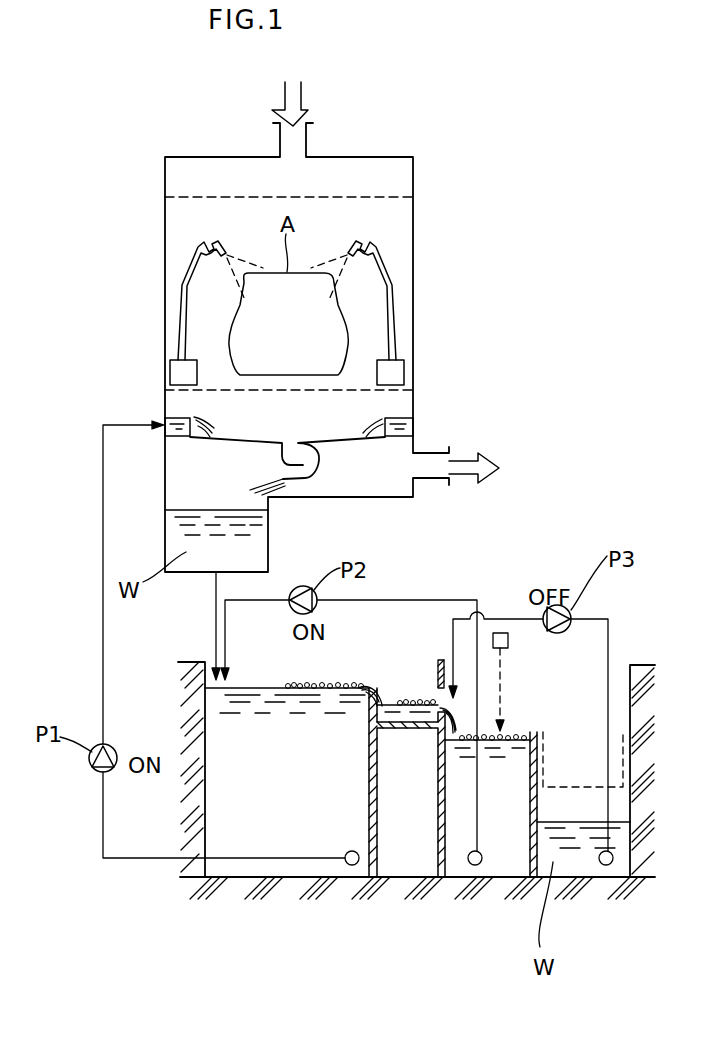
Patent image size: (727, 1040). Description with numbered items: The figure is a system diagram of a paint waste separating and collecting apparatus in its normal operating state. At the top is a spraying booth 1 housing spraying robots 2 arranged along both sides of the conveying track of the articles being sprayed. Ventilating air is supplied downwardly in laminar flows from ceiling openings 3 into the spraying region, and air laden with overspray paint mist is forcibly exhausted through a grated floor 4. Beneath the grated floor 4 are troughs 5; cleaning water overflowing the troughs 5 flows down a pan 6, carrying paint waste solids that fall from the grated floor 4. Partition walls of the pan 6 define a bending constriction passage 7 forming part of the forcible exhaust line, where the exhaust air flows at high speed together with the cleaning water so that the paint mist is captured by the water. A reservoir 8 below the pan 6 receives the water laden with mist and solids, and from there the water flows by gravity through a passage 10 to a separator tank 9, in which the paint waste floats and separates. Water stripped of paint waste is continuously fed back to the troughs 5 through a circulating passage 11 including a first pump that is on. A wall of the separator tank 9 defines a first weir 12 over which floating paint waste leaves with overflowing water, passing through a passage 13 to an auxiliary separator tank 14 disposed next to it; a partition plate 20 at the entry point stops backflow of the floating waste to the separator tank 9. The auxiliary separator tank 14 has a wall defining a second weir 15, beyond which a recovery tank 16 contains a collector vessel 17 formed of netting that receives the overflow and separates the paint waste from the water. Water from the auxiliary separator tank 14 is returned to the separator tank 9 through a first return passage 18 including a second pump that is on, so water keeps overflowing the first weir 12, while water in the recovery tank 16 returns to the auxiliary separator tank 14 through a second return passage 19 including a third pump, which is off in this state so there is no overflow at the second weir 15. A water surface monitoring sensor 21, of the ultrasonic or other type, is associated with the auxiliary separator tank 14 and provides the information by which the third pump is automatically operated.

The spraying booth 1 is at (165, 215).
The spraying robots 2 is at (182, 290).
The ceiling openings 3 is at (369, 202).
The grated floor 4 is at (215, 390).
The troughs 5 is at (184, 442).
The pan 6 is at (236, 445).
The bending constriction passage 7 is at (320, 468).
The reservoir 8 is at (164, 537).
The separator tank 9 is at (230, 806).
The passage 10 is at (215, 620).
The circulating passage 11 is at (103, 635).
The first weir 12 is at (365, 712).
The passage 13 is at (402, 733).
The auxiliary separator tank 14 is at (497, 860).
The second weir 15 is at (528, 745).
The recovery tank 16 is at (575, 860).
The collector vessel 17 is at (623, 770).
The first return passage 18 is at (433, 600).
The second return passage 19 is at (608, 642).
The partition plate 20 is at (440, 670).
The water surface monitoring sensor 21 is at (508, 640).